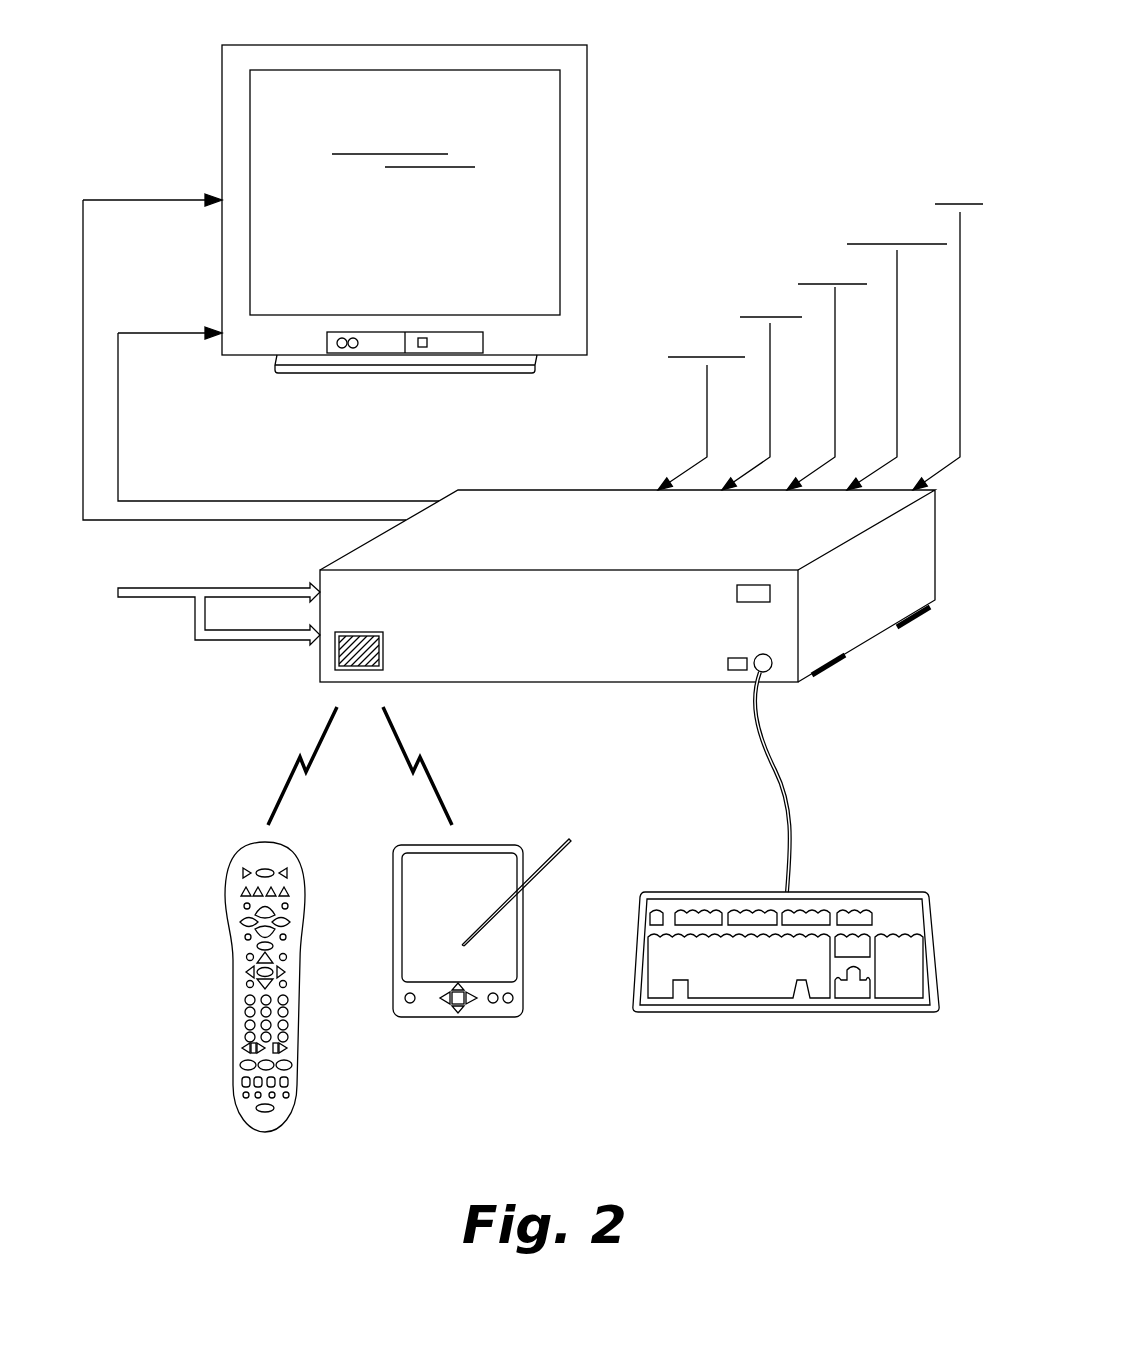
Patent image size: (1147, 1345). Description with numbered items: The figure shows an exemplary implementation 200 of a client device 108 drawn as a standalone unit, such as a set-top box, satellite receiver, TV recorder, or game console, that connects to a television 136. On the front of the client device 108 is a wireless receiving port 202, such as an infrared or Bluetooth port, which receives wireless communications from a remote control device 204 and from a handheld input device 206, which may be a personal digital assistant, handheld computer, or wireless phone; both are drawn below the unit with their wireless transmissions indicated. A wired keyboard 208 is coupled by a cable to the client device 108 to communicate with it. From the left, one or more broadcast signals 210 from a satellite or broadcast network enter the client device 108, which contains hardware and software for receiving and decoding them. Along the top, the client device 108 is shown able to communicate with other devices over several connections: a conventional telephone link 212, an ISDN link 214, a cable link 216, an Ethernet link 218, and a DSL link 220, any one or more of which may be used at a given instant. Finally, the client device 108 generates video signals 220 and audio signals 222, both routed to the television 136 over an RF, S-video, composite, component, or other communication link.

The exemplary implementation 200 is at (716, 73).
The client device 108 is at (528, 490).
The television 136 is at (531, 302).
The wireless receiving port 202 is at (375, 632).
The remote control device 204 is at (228, 872).
The handheld input device 206 is at (478, 845).
The wired keyboard 208 is at (837, 892).
The broadcast signals 210 is at (180, 598).
The telephone link 212 is at (707, 315).
The ISDN link 214 is at (770, 273).
The cable link 216 is at (833, 240).
The Ethernet link 218 is at (897, 202).
The DSL link 220 is at (183, 238).
The audio signals 222 is at (183, 375).